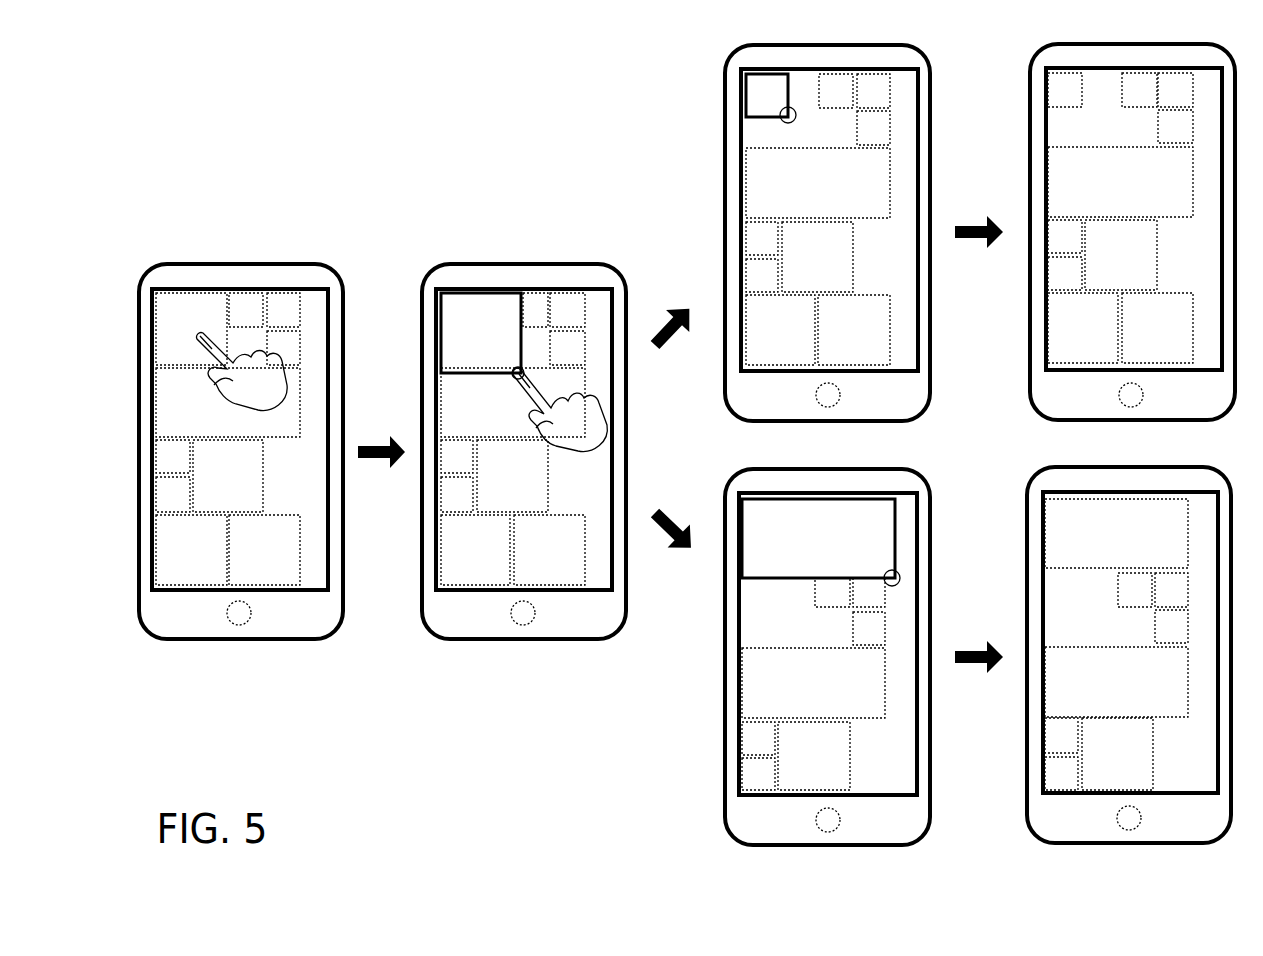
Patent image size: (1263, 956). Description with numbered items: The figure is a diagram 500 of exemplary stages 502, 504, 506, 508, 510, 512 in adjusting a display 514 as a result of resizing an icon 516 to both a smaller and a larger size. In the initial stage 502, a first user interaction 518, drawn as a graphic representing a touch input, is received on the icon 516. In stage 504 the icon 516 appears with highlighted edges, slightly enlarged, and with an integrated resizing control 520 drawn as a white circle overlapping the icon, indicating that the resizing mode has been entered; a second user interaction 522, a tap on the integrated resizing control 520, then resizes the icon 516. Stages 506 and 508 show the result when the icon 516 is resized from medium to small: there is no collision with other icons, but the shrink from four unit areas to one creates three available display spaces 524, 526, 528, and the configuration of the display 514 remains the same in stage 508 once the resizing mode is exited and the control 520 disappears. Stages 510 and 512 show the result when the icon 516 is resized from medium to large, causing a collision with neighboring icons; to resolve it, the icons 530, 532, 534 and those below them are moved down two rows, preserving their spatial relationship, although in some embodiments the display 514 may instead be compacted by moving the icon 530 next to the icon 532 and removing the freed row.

The diagram 500 is at (338, 150).
The initial stage 502 is at (224, 681).
The stage 504 is at (506, 684).
The stage 506 is at (818, 448).
The stage 508 is at (1120, 448).
The stage 510 is at (811, 872).
The stage 512 is at (1118, 870).
The display 514 is at (1205, 153).
The icon 516 is at (1062, 88).
The first user interaction 518 is at (242, 372).
The integrated resizing control 520 is at (515, 378).
The second user interaction 522 is at (560, 409).
The available display space 524 is at (805, 92).
The available display space 526 is at (765, 138).
The available display space 528 is at (807, 138).
The icon 530 is at (877, 128).
The icon 532 is at (837, 88).
The icon 534 is at (877, 92).